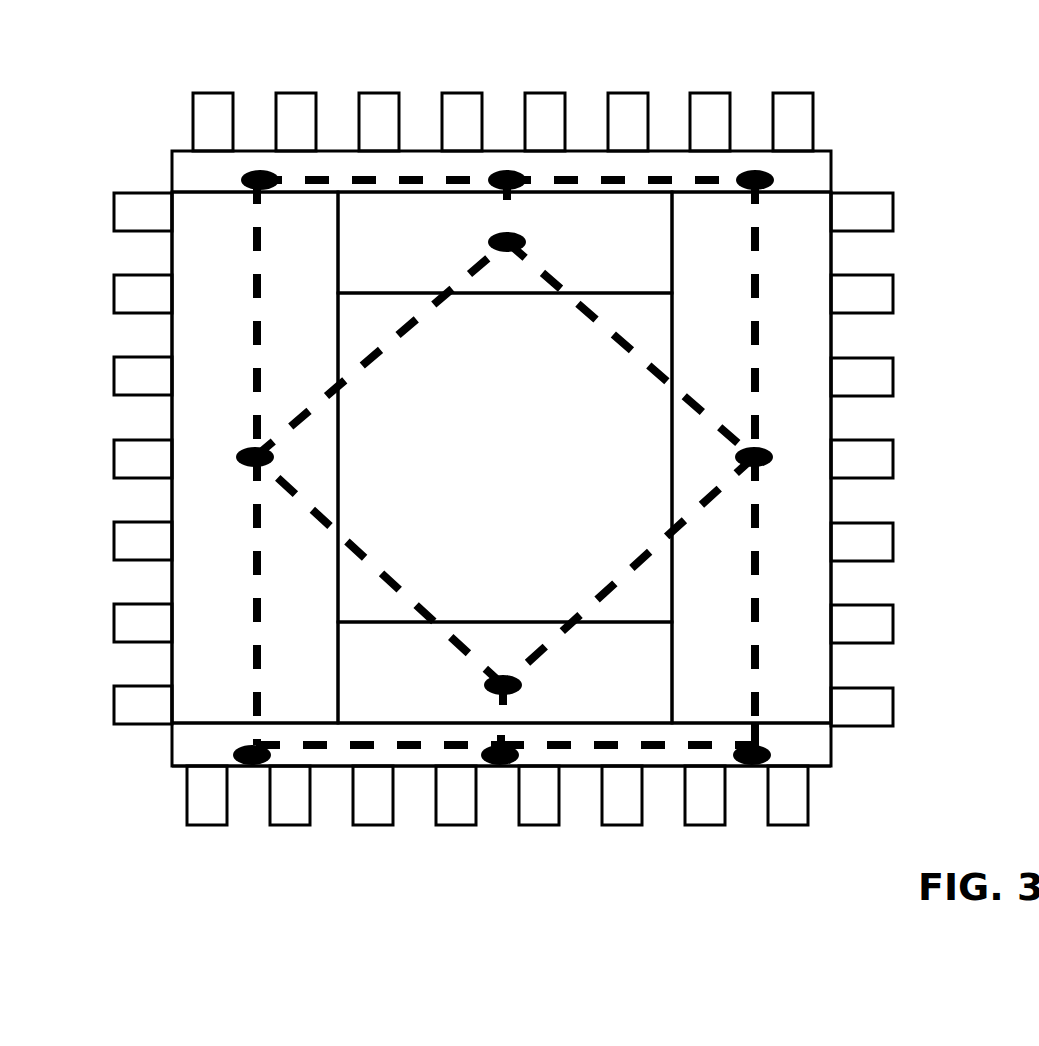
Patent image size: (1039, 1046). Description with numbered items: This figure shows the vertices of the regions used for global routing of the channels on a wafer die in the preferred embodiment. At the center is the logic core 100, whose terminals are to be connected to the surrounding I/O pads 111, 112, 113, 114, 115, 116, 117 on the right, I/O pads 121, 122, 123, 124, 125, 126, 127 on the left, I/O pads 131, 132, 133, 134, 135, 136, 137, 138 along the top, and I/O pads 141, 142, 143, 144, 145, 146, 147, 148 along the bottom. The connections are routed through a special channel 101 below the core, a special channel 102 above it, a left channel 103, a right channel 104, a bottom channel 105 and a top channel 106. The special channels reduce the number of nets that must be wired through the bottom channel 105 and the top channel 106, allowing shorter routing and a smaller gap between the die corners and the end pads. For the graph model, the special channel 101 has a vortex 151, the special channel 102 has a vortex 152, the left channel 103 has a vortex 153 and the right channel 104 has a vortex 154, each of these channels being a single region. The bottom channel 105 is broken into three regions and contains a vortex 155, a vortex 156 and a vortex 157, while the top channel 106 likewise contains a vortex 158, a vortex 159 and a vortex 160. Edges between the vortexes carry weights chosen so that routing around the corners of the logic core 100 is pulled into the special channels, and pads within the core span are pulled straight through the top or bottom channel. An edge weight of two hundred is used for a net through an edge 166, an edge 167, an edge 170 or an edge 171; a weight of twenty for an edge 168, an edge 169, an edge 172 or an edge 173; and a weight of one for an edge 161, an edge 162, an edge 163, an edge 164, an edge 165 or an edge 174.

The logic core 100 is at (530, 476).
The special channel 101 is at (655, 666).
The special channel 102 is at (428, 286).
The left channel 103 is at (235, 266).
The right channel 104 is at (822, 260).
The bottom channel 105 is at (818, 737).
The top channel 106 is at (190, 157).
The I/O pad 111 is at (893, 218).
The I/O pad 112 is at (893, 300).
The I/O pad 113 is at (893, 383).
The I/O pad 114 is at (893, 465).
The I/O pad 115 is at (893, 548).
The I/O pad 116 is at (893, 630).
The I/O pad 117 is at (893, 700).
The I/O pad 121 is at (114, 217).
The I/O pad 122 is at (114, 299).
The I/O pad 123 is at (114, 381).
The I/O pad 124 is at (114, 464).
The I/O pad 125 is at (114, 546).
The I/O pad 126 is at (114, 628).
The I/O pad 127 is at (114, 710).
The I/O pad 131 is at (214, 93).
The I/O pad 132 is at (297, 93).
The I/O pad 133 is at (380, 93).
The I/O pad 134 is at (463, 93).
The I/O pad 135 is at (546, 93).
The I/O pad 136 is at (629, 93).
The I/O pad 137 is at (711, 93).
The I/O pad 138 is at (794, 93).
The I/O pad 141 is at (205, 825).
The I/O pad 142 is at (288, 825).
The I/O pad 143 is at (371, 825).
The I/O pad 144 is at (454, 825).
The I/O pad 145 is at (537, 825).
The I/O pad 146 is at (620, 825).
The I/O pad 147 is at (703, 825).
The I/O pad 148 is at (786, 825).
The vortex 151 is at (500, 678).
The vortex 152 is at (508, 252).
The vortex 153 is at (272, 453).
The vortex 154 is at (737, 455).
The vortex 155 is at (235, 752).
The vortex 156 is at (485, 752).
The vortex 157 is at (772, 758).
The vortex 158 is at (270, 192).
The vortex 159 is at (512, 190).
The vortex 160 is at (773, 182).
The edge 161 is at (315, 515).
The edge 162 is at (290, 420).
The edge 163 is at (690, 398).
The edge 164 is at (680, 527).
The edge 165 is at (495, 700).
The edge 166 is at (322, 745).
The edge 167 is at (692, 740).
The edge 168 is at (757, 652).
The edge 169 is at (757, 322).
The edge 170 is at (688, 180).
The edge 171 is at (356, 183).
The edge 172 is at (255, 302).
The edge 173 is at (252, 675).
The edge 174 is at (512, 200).